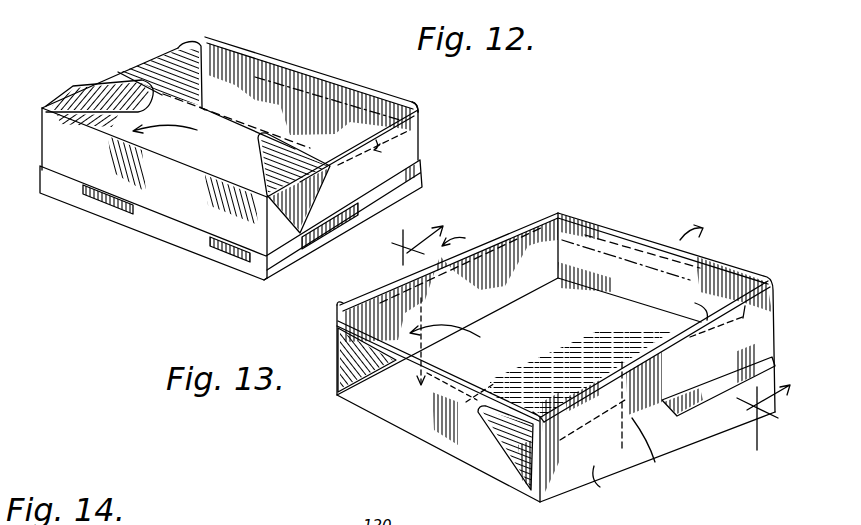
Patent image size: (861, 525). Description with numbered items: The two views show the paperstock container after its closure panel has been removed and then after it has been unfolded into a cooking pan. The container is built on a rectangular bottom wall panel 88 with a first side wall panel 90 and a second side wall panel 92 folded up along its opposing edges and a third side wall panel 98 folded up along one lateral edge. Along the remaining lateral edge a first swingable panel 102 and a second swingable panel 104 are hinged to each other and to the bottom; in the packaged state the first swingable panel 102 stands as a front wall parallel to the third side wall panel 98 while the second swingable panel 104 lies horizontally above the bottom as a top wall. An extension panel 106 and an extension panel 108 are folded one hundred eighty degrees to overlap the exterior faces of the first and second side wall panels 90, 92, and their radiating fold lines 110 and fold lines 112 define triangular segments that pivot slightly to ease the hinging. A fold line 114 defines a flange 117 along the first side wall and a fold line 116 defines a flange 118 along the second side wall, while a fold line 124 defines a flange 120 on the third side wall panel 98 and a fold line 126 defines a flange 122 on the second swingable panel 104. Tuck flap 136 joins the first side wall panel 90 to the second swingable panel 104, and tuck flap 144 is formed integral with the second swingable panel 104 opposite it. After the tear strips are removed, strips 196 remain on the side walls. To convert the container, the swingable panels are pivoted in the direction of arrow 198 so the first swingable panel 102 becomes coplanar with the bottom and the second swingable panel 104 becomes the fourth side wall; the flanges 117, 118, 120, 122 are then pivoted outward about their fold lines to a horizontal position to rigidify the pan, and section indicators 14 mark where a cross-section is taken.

In FIG. 13, the section line 14- 14 is at (599, 329).
In FIG. 13, the bottom wall panel 88 is at (552, 334).
In FIG. 12, the first side wall panel 90 is at (405, 148).
In FIG. 13, the first side wall panel 90 is at (718, 359).
In FIG. 12, the second side wall panel 92 is at (170, 72).
In FIG. 13, the second side wall panel 92 is at (531, 287).
In FIG. 12, the third side wall panel 98 is at (277, 82).
In FIG. 13, the third side wall panel 98 is at (649, 292).
In FIG. 12, the first swingable panel 102 is at (192, 198).
In FIG. 12, the second swingable panel 104 is at (240, 161).
In FIG. 12, the extension panel 106 is at (297, 248).
In FIG. 13, the extension panel 106 is at (611, 482).
In FIG. 13, the extension panel 108 is at (403, 320).
In FIG. 13, the fold lines 110 is at (659, 446).
In FIG. 13, the fold lines 112 is at (451, 339).
In FIG. 12, the fold line 114 is at (410, 128).
In FIG. 13, the fold line 114 is at (743, 318).
In FIG. 12, the fold line 116 is at (150, 60).
In FIG. 13, the fold line 116 is at (543, 225).
In FIG. 12, the flange 117 is at (374, 159).
In FIG. 13, the flange 117 is at (689, 303).
In FIG. 12, the flange 118 is at (182, 40).
In FIG. 13, the flange 118 is at (508, 232).
In FIG. 12, the flange 120 is at (312, 68).
In FIG. 13, the flange 120 is at (630, 228).
In FIG. 12, the flange 122 is at (260, 119).
In FIG. 13, the flange 122 is at (432, 355).
In FIG. 12, the fold line 124 is at (343, 92).
In FIG. 13, the fold line 124 is at (650, 253).
In FIG. 12, the fold line 126 is at (220, 96).
In FIG. 13, the fold line 126 is at (466, 402).
In FIG. 12, the tuck flap 136 is at (312, 137).
In FIG. 13, the tuck flap 136 is at (520, 445).
In FIG. 12, the tuck flap 144 is at (97, 92).
In FIG. 13, the tuck flap 144 is at (364, 396).
In FIG. 12, the strips 196 is at (167, 227).
In FIG. 13, the strips 196 is at (773, 333).
In FIG. 12, the arrow 198 is at (170, 140).